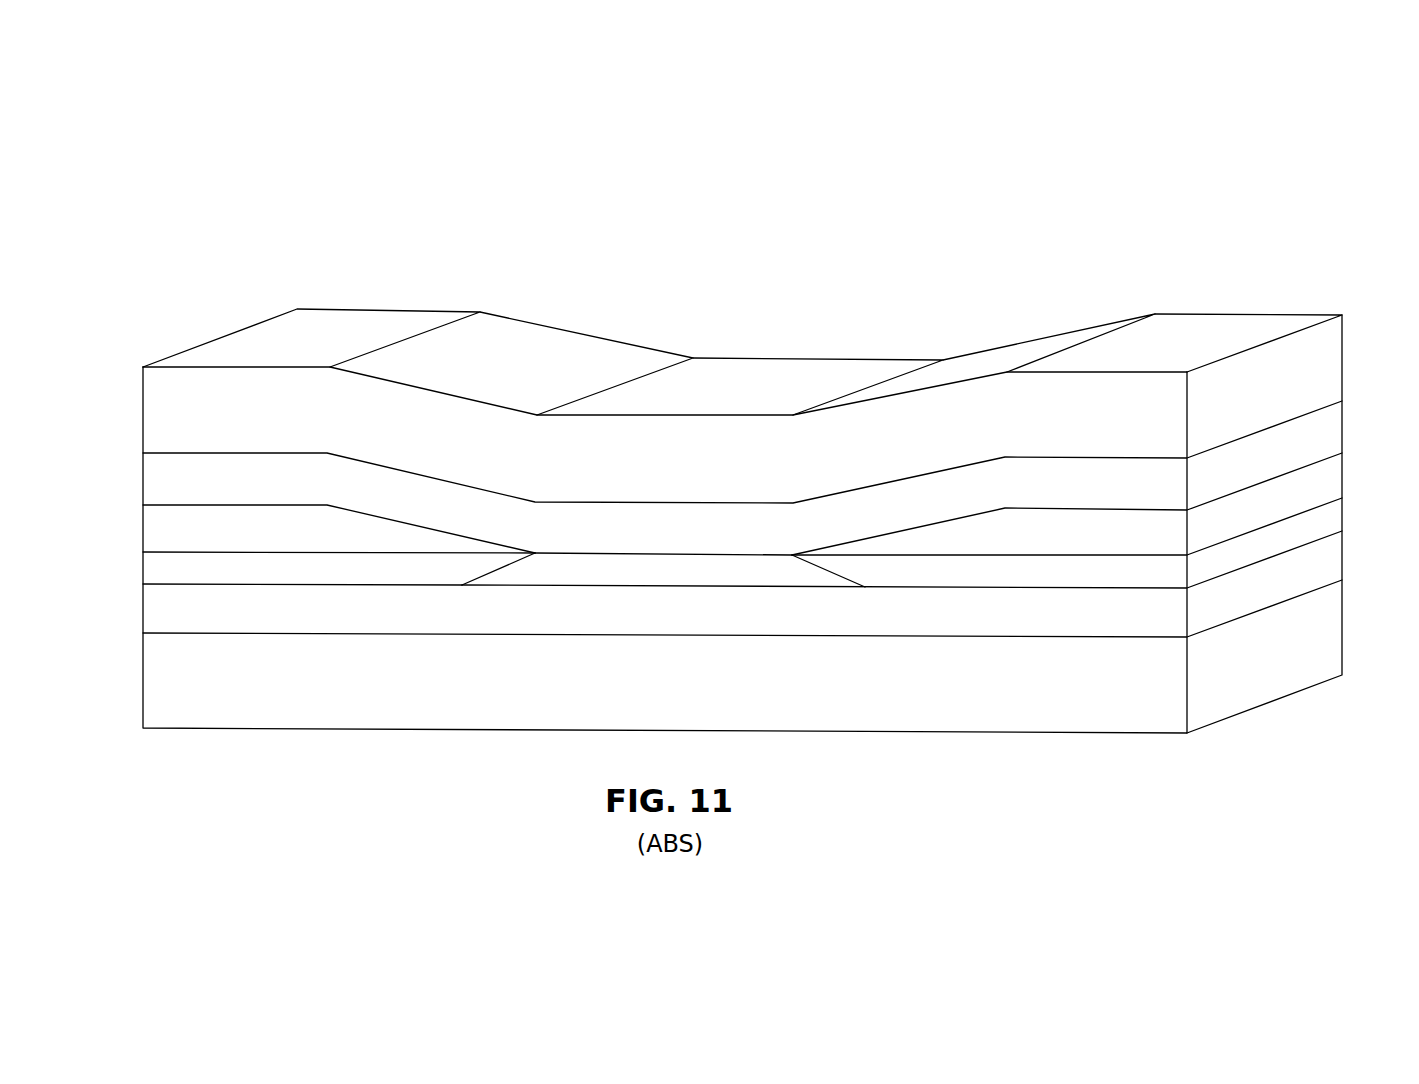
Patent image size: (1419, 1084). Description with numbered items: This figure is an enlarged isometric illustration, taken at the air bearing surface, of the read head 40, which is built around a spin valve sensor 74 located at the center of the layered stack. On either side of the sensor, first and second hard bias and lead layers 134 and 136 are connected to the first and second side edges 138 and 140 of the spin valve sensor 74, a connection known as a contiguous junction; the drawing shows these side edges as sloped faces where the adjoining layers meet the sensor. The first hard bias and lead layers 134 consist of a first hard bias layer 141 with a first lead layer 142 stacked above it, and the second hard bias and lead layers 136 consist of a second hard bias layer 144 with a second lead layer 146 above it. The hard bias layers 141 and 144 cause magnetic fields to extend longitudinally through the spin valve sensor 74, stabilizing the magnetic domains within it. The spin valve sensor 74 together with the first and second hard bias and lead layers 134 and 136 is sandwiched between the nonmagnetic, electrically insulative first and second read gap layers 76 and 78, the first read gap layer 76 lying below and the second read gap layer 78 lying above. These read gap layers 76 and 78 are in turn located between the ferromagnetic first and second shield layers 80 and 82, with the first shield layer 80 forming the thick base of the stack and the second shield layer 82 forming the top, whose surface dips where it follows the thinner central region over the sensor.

The read head 40 is at (817, 332).
The spin valve sensor 74 is at (572, 553).
The first read gap layer 76 is at (847, 622).
The second read gap layer 78 is at (393, 487).
The first shield layer 80 is at (302, 713).
The second shield layer 82 is at (593, 345).
The first hard bias and lead layers 134 is at (140, 505).
The second hard bias and lead layers 136 is at (1348, 453).
The first side edge 138 is at (483, 573).
The second side edge 140 is at (842, 575).
The first hard bias layer 141 is at (187, 568).
The first lead layer 142 is at (187, 518).
The second hard bias layer 144 is at (1132, 573).
The second lead layer 146 is at (1133, 522).